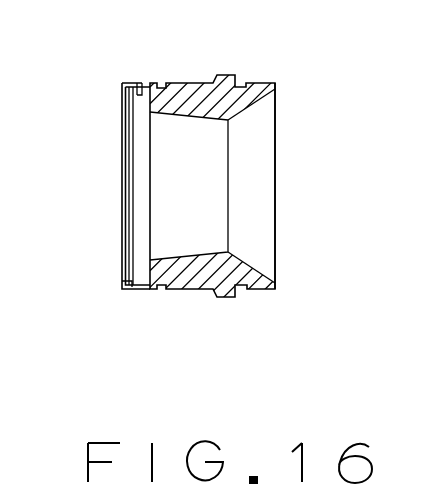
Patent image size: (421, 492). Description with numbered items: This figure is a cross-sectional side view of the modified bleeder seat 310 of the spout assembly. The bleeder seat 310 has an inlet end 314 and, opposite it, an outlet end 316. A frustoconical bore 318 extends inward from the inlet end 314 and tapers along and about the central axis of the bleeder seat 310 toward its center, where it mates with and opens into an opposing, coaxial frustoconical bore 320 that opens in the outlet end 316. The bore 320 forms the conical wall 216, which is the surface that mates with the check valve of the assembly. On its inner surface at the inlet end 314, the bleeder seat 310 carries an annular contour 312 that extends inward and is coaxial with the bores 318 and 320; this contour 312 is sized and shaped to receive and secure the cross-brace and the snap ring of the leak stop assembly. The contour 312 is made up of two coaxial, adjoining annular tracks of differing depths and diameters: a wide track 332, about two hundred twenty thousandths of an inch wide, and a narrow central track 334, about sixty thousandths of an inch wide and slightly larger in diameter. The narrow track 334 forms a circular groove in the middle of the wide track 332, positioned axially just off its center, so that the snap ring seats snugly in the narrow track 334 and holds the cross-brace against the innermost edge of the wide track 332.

The bleeder seat 310 is at (257, 319).
The annular contour 312 is at (110, 242).
The inlet end 314 is at (110, 203).
The outlet end 316 is at (285, 220).
The frustoconical bore 318 is at (183, 105).
The frustoconical bore 320 is at (255, 103).
The conical wall 216 is at (250, 264).
The wide track 332 is at (143, 290).
The narrow central track 334 is at (133, 83).